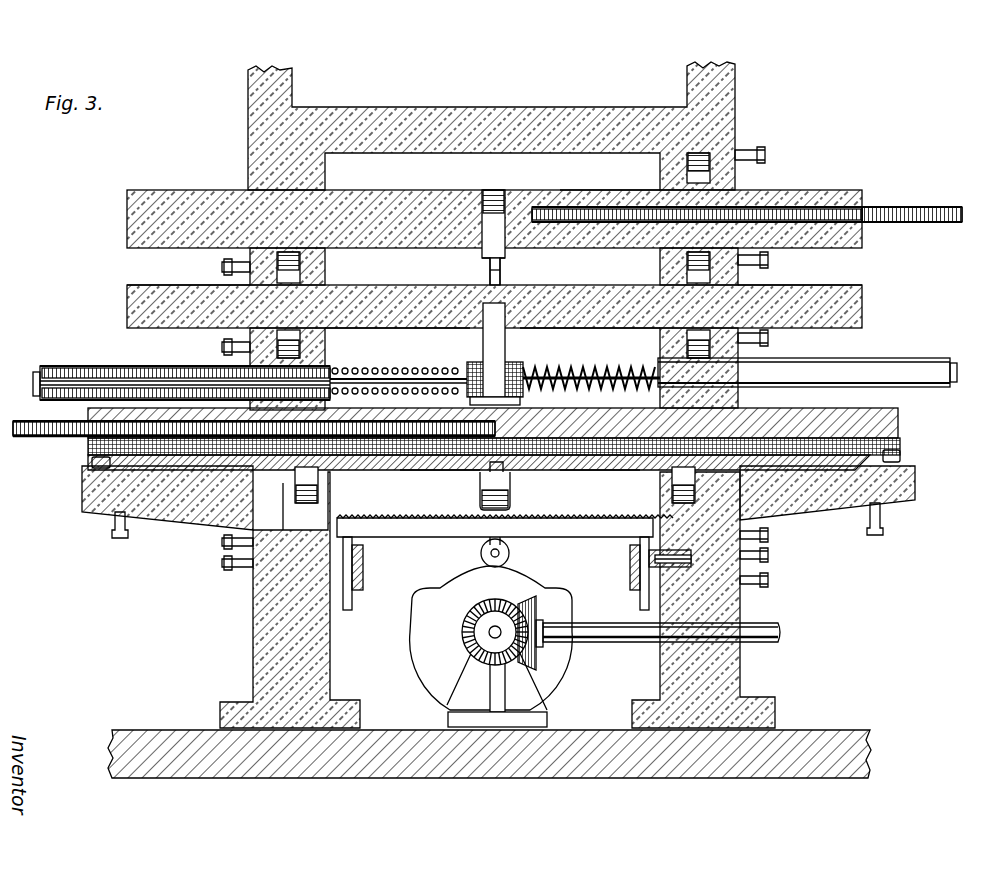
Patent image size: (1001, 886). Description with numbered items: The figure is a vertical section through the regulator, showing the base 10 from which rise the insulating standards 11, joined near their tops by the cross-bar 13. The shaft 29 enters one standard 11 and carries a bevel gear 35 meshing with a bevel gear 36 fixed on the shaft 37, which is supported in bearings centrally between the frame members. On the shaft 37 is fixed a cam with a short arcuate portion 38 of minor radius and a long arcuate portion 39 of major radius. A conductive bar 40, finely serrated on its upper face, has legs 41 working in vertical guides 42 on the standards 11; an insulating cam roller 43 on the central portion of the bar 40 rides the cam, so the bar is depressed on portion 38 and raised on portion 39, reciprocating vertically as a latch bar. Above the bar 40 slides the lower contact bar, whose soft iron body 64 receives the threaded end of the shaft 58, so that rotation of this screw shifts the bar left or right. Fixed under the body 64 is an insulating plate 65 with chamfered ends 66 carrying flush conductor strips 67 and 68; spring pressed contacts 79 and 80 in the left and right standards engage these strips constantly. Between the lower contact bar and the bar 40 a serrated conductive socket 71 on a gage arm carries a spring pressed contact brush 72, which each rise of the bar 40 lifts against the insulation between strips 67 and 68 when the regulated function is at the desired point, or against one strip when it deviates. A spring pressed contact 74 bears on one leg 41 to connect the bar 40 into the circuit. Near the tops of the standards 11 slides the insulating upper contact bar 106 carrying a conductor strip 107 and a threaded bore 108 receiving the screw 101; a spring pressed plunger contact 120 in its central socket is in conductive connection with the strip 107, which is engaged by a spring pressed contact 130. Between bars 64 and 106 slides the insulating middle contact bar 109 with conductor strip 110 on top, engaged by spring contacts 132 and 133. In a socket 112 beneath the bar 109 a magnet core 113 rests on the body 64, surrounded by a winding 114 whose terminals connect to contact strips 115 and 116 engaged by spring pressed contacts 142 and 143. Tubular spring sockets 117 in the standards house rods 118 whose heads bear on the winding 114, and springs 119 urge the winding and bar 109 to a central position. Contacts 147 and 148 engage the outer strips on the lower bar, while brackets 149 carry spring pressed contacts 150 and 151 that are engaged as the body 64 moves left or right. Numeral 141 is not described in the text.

The base 10 is at (158, 740).
The standards 11 is at (265, 672).
The cross-bar 13 is at (642, 107).
The shaft 29 is at (780, 633).
The bevel gear 35 is at (555, 680).
The bevel gear 36 is at (460, 626).
The shaft 37 is at (490, 634).
The short arcuate cam portion 38 is at (525, 582).
The long arcuate cam portion 39 is at (418, 680).
The serrated bar 40 is at (598, 518).
The legs 41 is at (352, 604).
The vertical guides 42 is at (363, 580).
The cam roller 43 is at (481, 555).
The shaft 58 is at (40, 440).
The lower contact bar body 64 is at (900, 412).
The insulating plate 65 is at (900, 436).
The chamfered ends 66 is at (88, 453).
The conductor strip 67 is at (440, 470).
The conductor strip 68 is at (622, 465).
The conductive socket 71 is at (480, 494).
The spring pressed contact brush 72 is at (510, 464).
The spring pressed contact 74 is at (632, 565).
The spring pressed contact 79 is at (320, 479).
The spring pressed contact 80 is at (672, 479).
The screw 101 is at (928, 206).
The upper contact bar 106 is at (445, 190).
The conductor strip 107 is at (595, 190).
The threaded bore 108 is at (628, 246).
The middle contact bar 109 is at (127, 313).
The conductor strip 110 is at (185, 285).
The socket 112 is at (470, 285).
The magnet core 113 is at (505, 340).
The winding 114 is at (470, 362).
The contact strip 115 is at (400, 328).
The contact strip 116 is at (630, 328).
The tubular spring sockets 117 is at (112, 365).
The rods 118 is at (52, 368).
The springs 119 is at (186, 365).
The spring pressed plunger contact 120 is at (505, 268).
The spring pressed contact 130 is at (705, 178).
The spring contact 132 is at (300, 272).
The spring contact 133 is at (690, 270).
The plate surface 141 is at (822, 285).
The spring pressed contact 142 is at (335, 357).
The spring pressed contact 143 is at (720, 326).
The contact 147 is at (82, 507).
The contact 148 is at (890, 508).
The brackets 149 is at (210, 518).
The spring pressed contact 150 is at (92, 463).
The spring pressed contact 151 is at (905, 456).